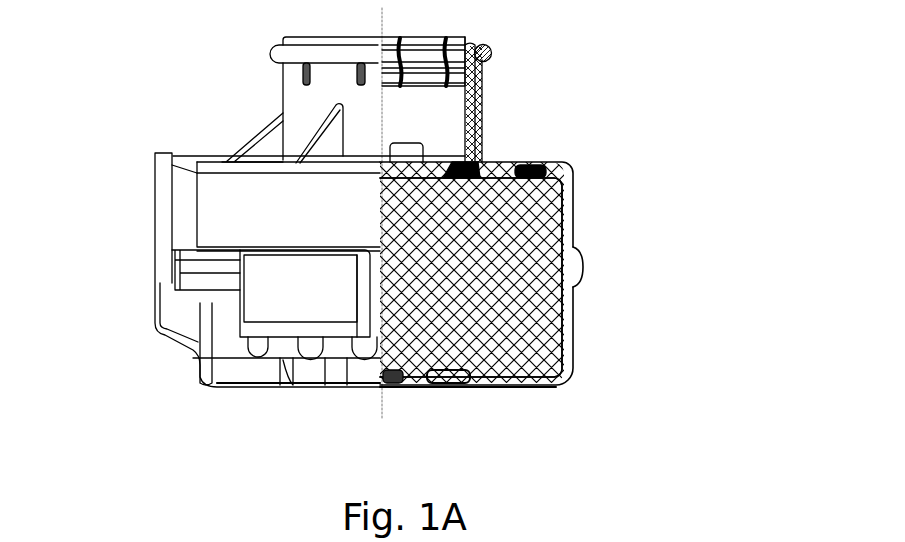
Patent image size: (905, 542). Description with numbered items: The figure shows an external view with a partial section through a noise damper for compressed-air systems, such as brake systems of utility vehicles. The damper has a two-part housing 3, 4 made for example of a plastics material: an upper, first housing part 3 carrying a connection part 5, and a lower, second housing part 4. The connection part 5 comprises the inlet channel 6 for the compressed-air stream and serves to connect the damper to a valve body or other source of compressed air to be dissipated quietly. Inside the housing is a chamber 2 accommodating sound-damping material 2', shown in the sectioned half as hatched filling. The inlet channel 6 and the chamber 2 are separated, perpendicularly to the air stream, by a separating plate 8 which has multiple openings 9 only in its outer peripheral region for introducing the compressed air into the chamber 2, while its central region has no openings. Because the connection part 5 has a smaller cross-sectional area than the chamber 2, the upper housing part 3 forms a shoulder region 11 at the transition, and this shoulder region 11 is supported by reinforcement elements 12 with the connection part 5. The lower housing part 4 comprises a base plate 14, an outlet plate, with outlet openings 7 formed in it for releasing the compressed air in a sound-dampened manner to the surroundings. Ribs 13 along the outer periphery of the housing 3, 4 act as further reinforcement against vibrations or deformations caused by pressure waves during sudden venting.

The chamber 2 is at (583, 272).
The sound-damping material 2' is at (471, 277).
The first housing part 3 is at (577, 222).
The second housing part 4 is at (575, 330).
The connection part 5 is at (478, 75).
The inlet channel 6 is at (418, 99).
The outlet openings 7 is at (447, 381).
The separating plate 8 is at (433, 163).
The openings 9 is at (462, 163).
The shoulder region 11 is at (480, 162).
The reinforcement elements 12 is at (270, 142).
The ribs 13 is at (198, 262).
The base plate 14 is at (540, 381).